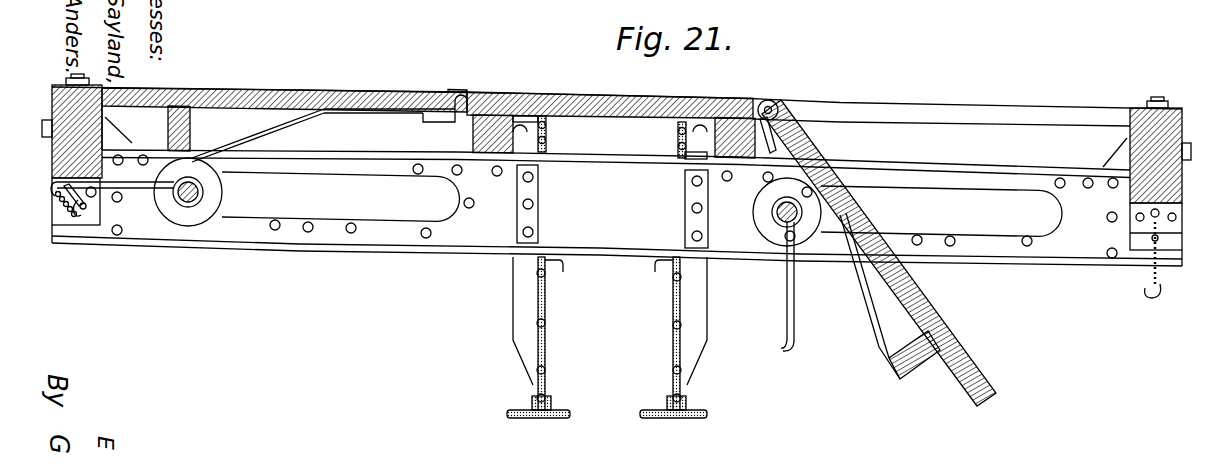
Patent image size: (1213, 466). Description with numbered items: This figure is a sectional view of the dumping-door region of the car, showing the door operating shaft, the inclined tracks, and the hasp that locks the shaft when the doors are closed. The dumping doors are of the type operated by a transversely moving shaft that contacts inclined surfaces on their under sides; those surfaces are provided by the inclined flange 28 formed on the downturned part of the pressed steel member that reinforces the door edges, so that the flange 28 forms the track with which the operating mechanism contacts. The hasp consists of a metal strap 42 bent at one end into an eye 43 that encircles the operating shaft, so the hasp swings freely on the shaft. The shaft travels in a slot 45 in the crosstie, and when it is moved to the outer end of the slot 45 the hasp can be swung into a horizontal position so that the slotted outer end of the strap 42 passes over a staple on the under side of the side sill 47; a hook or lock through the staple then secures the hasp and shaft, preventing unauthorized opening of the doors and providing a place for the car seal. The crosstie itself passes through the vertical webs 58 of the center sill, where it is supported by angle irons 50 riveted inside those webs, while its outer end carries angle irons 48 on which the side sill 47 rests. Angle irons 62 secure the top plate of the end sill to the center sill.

The inclined flange 28 is at (262, 135).
The metal strap 42 is at (788, 292).
The eye 43 is at (205, 188).
The slot 45 is at (642, 204).
The side sill 47 is at (107, 128).
The angle irons 48 is at (92, 217).
The angle irons 50 is at (653, 262).
The webs 58 is at (667, 312).
The angle irons 62 is at (547, 131).